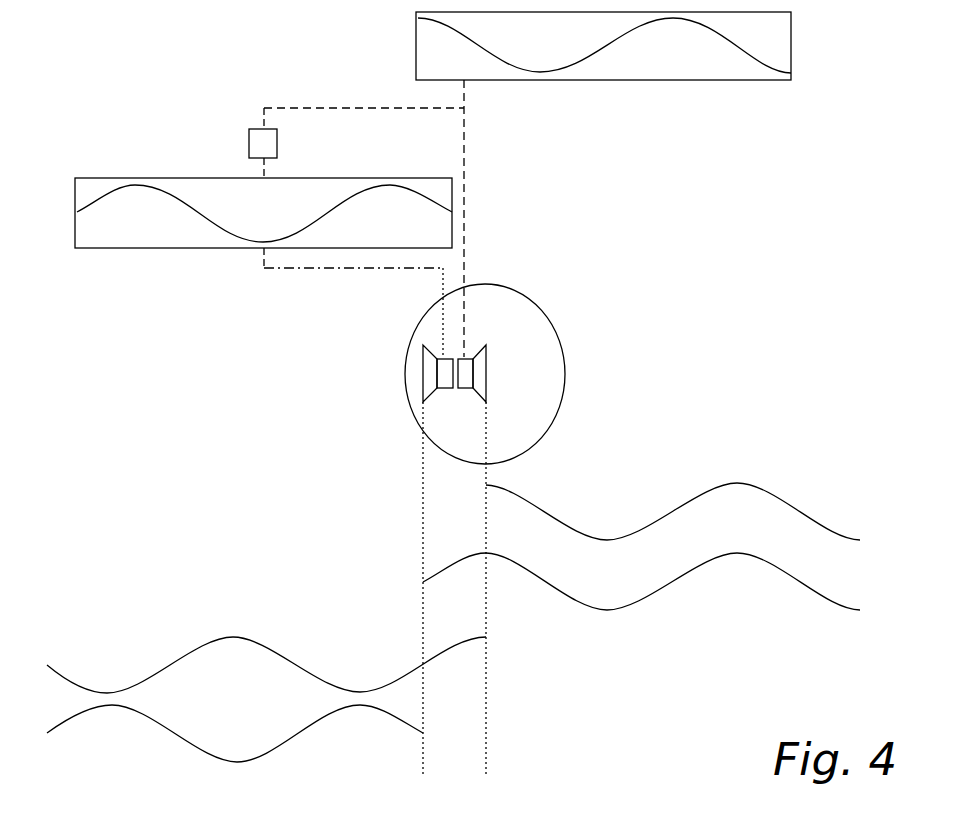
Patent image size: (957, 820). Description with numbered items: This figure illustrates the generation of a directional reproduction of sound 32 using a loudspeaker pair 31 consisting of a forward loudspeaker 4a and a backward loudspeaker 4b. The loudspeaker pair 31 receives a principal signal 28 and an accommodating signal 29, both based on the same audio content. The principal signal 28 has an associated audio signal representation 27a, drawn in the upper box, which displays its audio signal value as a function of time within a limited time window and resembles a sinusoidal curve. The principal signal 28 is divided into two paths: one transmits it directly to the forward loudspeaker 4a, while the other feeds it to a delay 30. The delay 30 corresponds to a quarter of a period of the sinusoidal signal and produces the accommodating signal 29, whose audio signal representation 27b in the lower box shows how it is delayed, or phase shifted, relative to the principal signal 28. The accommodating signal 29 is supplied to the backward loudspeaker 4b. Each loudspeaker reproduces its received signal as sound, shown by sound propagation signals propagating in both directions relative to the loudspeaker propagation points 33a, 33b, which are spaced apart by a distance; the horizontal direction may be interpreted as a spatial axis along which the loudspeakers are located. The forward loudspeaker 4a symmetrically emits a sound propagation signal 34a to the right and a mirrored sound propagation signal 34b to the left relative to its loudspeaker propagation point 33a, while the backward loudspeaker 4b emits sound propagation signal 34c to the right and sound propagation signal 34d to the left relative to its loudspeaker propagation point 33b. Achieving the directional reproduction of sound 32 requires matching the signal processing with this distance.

The audio signal representation 27a is at (730, 81).
The audio signal representation 27b is at (138, 249).
The principal signal 28 is at (465, 152).
The accommodating signal 29 is at (303, 269).
The delay 30 is at (247, 147).
The loudspeaker pair 31 is at (362, 474).
The directional reproduction of sound 32 is at (565, 393).
The loudspeaker propagation point 33a is at (486, 765).
The loudspeaker propagation point 33b is at (420, 762).
The sound propagation signal 34a is at (787, 503).
The sound propagation signal 34b is at (62, 672).
The sound propagation signal 34c is at (767, 563).
The sound propagation signal 34d is at (146, 715).
The forward loudspeaker 4a is at (487, 373).
The backward loudspeaker 4b is at (423, 397).